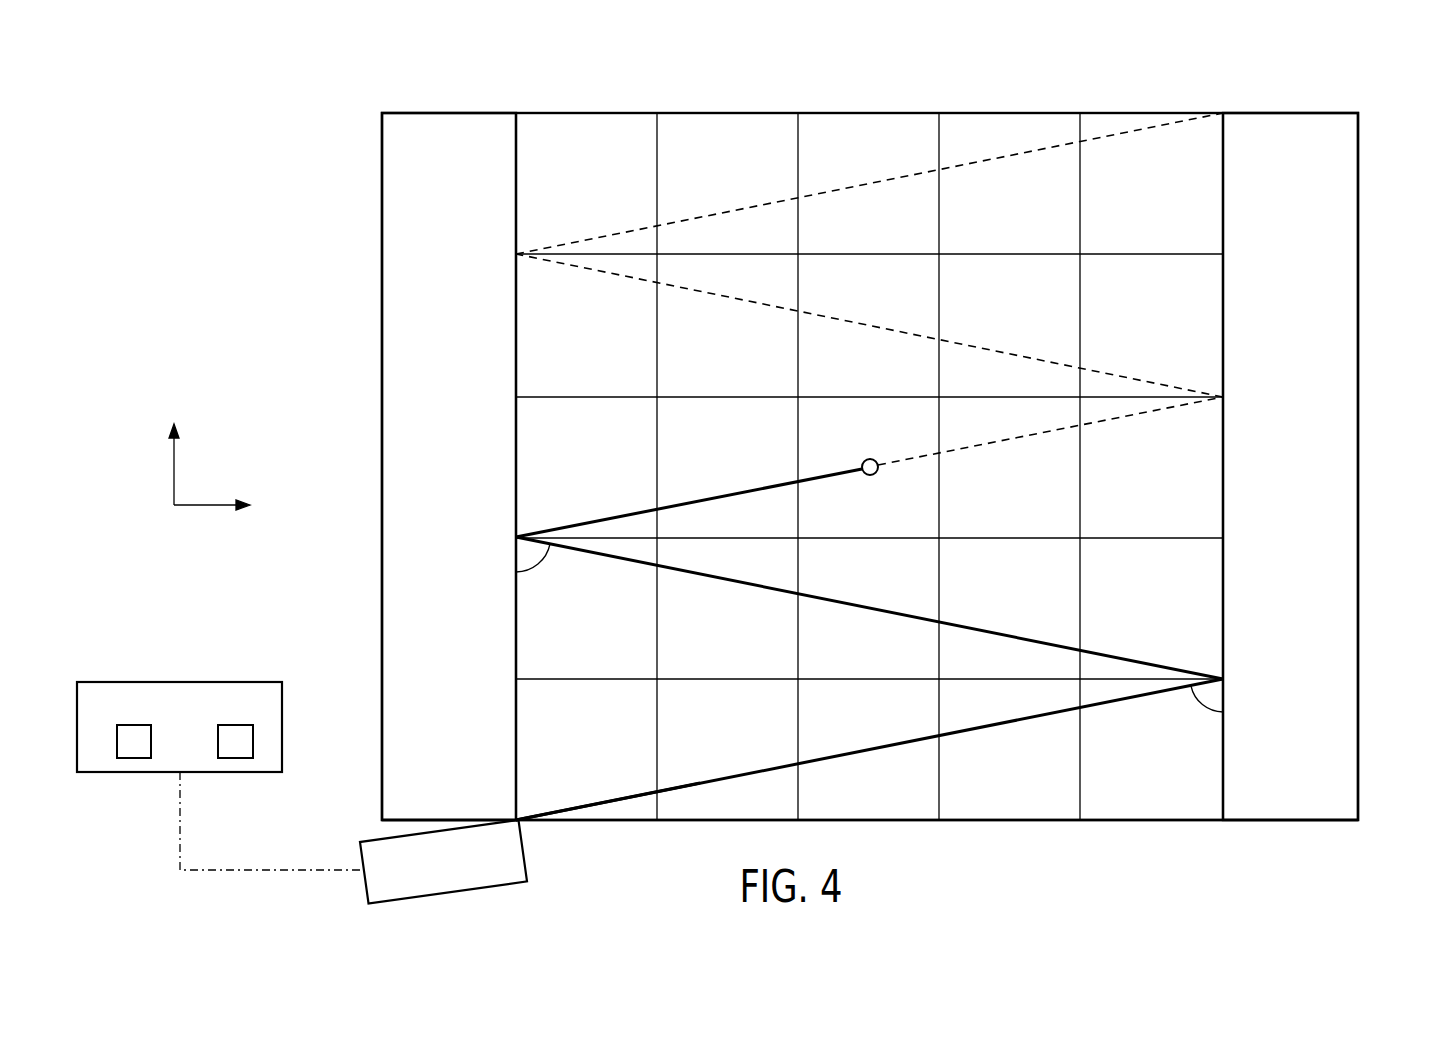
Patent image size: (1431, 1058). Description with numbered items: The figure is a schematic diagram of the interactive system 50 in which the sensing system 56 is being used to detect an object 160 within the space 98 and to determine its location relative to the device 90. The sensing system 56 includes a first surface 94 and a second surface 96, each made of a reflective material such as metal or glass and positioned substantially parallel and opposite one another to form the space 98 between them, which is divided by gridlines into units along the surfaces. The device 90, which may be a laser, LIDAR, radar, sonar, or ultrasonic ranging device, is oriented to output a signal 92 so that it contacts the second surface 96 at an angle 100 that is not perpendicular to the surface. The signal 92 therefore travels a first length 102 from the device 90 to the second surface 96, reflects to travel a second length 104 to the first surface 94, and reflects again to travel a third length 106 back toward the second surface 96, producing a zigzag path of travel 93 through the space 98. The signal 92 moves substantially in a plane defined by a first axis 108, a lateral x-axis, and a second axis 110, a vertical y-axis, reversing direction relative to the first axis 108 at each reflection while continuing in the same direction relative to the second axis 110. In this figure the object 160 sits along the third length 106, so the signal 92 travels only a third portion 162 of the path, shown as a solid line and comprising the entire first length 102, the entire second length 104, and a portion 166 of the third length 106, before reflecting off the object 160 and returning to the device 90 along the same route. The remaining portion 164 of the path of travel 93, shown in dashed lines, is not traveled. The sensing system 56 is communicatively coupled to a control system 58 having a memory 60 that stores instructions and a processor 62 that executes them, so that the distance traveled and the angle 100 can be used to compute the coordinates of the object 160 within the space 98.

The interactive system 50 is at (1388, 148).
The sensing system 56 is at (1293, 838).
The control system 58 is at (282, 697).
The memory 60 is at (134, 758).
The processor 62 is at (235, 758).
The device 90 is at (375, 841).
The signal 92 is at (622, 797).
The path of travel 93 is at (1009, 748).
The first surface 94 is at (382, 343).
The second surface 96 is at (1358, 397).
The space 98 is at (1030, 838).
The angle 100 is at (540, 566).
The first length 102 is at (842, 755).
The second length 104 is at (893, 612).
The third length 106 is at (718, 497).
The first axis 108 is at (205, 505).
The second axis 110 is at (174, 470).
The object 160 is at (870, 476).
The third portion 162 is at (745, 738).
The remaining portion 164 is at (745, 326).
The portion 166 is at (745, 460).